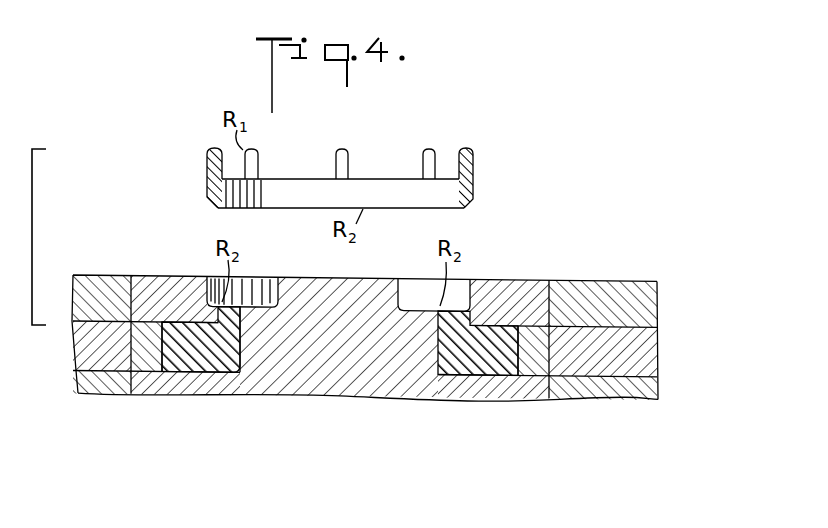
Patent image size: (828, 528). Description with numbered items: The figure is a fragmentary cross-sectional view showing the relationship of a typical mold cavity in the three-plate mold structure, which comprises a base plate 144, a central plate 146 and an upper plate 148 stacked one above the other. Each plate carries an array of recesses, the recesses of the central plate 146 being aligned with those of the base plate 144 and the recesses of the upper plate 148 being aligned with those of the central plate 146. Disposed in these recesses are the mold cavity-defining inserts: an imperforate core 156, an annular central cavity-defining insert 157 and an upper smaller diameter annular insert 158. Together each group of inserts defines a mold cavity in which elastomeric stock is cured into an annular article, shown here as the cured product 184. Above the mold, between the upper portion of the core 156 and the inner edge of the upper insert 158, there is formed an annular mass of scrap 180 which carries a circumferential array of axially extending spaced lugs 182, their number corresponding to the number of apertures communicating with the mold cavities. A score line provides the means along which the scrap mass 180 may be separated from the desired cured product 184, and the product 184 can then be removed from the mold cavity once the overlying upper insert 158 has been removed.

The annular mass of scrap 180 is at (478, 168).
The axially extending spaced lugs 182 is at (428, 160).
The upper plate 148 is at (648, 299).
The central plate 146 is at (648, 348).
The base plate 144 is at (652, 387).
The imperforate core 156 is at (342, 382).
The annular central cavity-defining insert 157 is at (532, 365).
The upper smaller diameter annular insert 158 is at (530, 288).
The cured product 184 is at (196, 368).